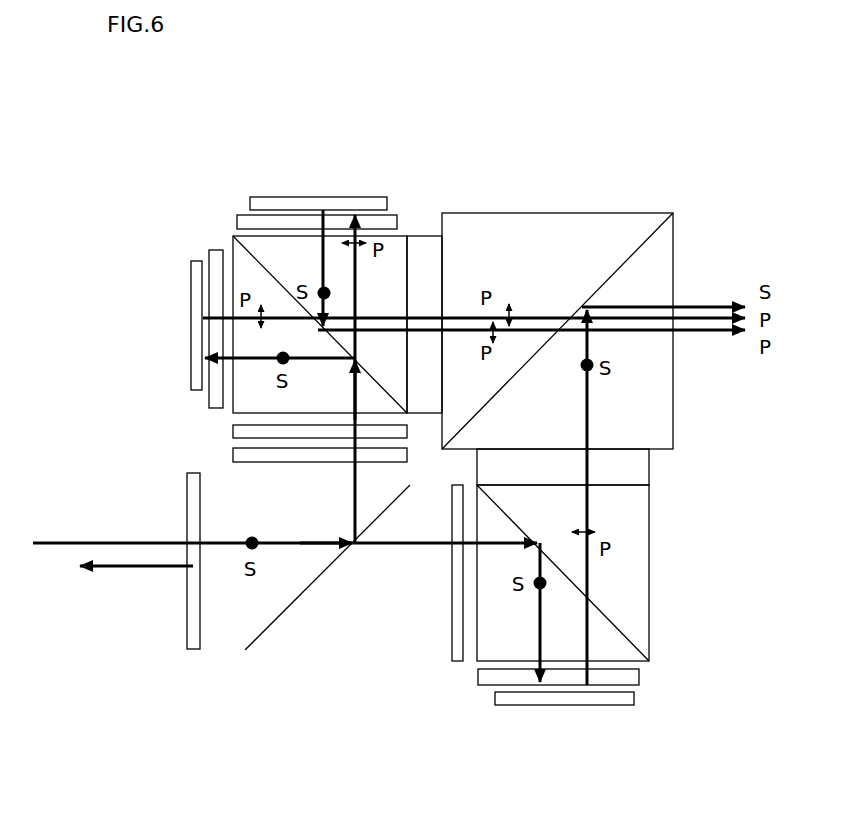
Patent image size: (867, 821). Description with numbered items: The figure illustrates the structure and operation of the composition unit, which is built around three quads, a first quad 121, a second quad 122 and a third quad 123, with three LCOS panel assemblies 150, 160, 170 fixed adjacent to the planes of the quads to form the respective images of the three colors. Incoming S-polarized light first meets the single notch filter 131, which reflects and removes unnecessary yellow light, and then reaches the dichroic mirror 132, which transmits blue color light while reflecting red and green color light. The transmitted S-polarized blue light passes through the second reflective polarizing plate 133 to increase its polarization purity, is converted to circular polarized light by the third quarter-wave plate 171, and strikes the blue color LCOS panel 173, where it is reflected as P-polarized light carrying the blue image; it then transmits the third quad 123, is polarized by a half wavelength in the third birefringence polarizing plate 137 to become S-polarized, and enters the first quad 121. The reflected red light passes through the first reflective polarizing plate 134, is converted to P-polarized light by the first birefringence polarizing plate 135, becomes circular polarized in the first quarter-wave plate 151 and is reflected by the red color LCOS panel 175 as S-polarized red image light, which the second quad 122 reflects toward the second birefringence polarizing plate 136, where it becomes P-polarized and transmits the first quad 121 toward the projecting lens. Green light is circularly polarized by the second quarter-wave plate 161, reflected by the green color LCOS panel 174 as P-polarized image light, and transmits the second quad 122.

The first quad 121 is at (623, 228).
The second quad 122 is at (392, 273).
The third quad 123 is at (633, 572).
The single notch filter 131 is at (187, 613).
The dichroic mirror 132 is at (310, 583).
The second reflective polarizing plate 133 is at (452, 620).
The first reflective polarizing plate 134 is at (278, 462).
The first birefringence polarizing plate 135 is at (233, 431).
The second birefringence polarizing plate 136 is at (425, 255).
The third birefringence polarizing plate 137 is at (640, 467).
The LCOS panel assembly 150 is at (237, 205).
The first quarter-wave plate 151 is at (238, 221).
The LCOS panel assembly 160 is at (200, 402).
The second quarter-wave plate 161 is at (217, 257).
The LCOS panel assembly 170 is at (643, 710).
The third quarter-wave plate 171 is at (633, 677).
The blue color LCOS panel 173 is at (519, 700).
The green color LCOS panel 174 is at (191, 298).
The red color LCOS panel 175 is at (316, 198).